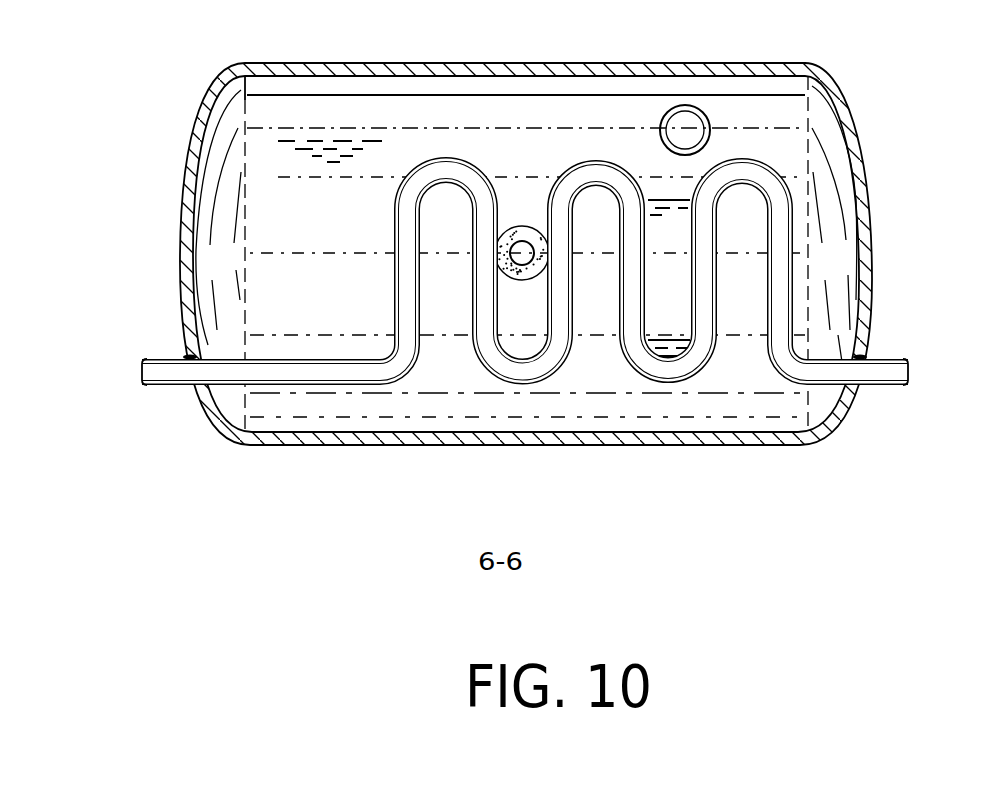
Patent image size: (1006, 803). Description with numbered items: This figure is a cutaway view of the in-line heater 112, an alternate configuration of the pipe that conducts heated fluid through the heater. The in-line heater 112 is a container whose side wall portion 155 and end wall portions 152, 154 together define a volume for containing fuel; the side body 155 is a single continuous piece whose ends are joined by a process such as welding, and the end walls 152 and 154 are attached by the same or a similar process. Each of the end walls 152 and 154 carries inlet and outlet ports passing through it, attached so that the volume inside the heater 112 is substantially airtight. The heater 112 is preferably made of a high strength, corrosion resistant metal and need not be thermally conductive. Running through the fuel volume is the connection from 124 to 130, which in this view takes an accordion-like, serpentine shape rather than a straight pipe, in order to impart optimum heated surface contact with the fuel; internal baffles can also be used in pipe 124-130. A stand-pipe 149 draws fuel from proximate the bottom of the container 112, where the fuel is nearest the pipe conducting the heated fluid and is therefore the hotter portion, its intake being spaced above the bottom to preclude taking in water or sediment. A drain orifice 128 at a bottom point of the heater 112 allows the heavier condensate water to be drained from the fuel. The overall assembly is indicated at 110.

The fuel heater assembly 110 is at (518, 273).
The in-line heater 112 is at (872, 262).
The pipe conducting heated fluid 124 is at (880, 360).
The drain orifice 128 is at (530, 226).
The pipe conducting heated fluid 130 is at (163, 358).
The stand-pipe 149 is at (712, 122).
The end wall portion 152 is at (185, 172).
The end wall portion 154 is at (865, 163).
The side wall portion 155 is at (648, 443).